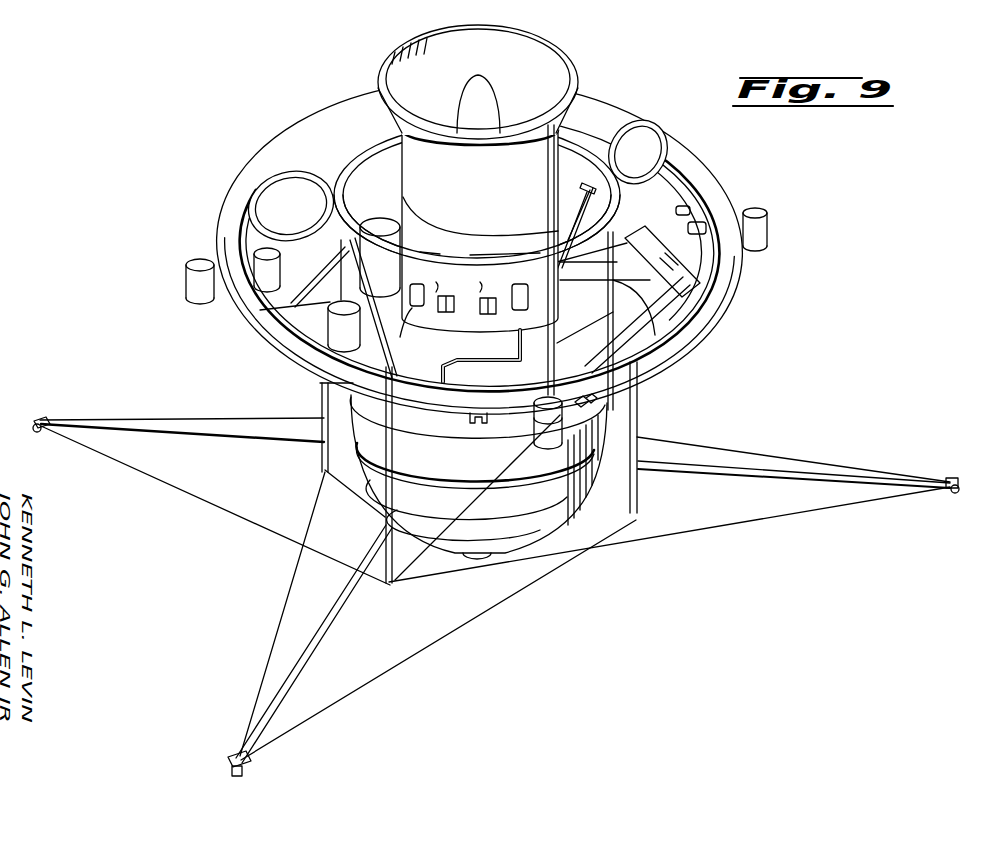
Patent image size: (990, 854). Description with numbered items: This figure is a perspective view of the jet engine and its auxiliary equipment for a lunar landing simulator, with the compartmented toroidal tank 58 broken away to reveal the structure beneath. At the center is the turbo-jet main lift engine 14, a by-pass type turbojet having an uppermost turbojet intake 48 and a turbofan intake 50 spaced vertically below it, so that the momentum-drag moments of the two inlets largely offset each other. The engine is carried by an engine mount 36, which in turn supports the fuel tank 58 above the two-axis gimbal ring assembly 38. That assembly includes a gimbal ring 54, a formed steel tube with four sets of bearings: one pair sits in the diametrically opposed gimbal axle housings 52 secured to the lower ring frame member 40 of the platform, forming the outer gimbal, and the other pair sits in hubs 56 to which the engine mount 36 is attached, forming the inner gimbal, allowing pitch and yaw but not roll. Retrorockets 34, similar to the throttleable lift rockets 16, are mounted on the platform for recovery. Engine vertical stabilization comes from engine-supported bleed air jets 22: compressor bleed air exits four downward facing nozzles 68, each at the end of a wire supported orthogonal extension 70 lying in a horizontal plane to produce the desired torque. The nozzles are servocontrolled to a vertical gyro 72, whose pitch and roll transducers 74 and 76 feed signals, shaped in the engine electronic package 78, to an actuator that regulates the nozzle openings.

The turbo-jet main lift engine 14 is at (488, 199).
The throttleable lift rockets 16 is at (534, 427).
The bleed air jets 22 is at (46, 413).
The retrorockets 34 is at (187, 288).
The engine mount 36 is at (350, 202).
The two-axis gimbal ring assembly 38 is at (737, 321).
The lower ring frame member 40 is at (690, 356).
The turbojet intake 48 is at (552, 61).
The turbofan intake 50 is at (573, 360).
The gimbal axle housings 52 is at (481, 396).
The gimbal ring 54 is at (677, 182).
The hubs 56 is at (289, 311).
The compartmented toroidal tank 58 is at (317, 152).
The downward facing nozzles 68 is at (34, 432).
The wire supported orthogonal extension 70 is at (193, 432).
The vertical gyro 72 is at (334, 331).
The pitch transducer 74 is at (588, 417).
The roll transducer 76 is at (698, 228).
The engine electronic package 78 is at (700, 283).